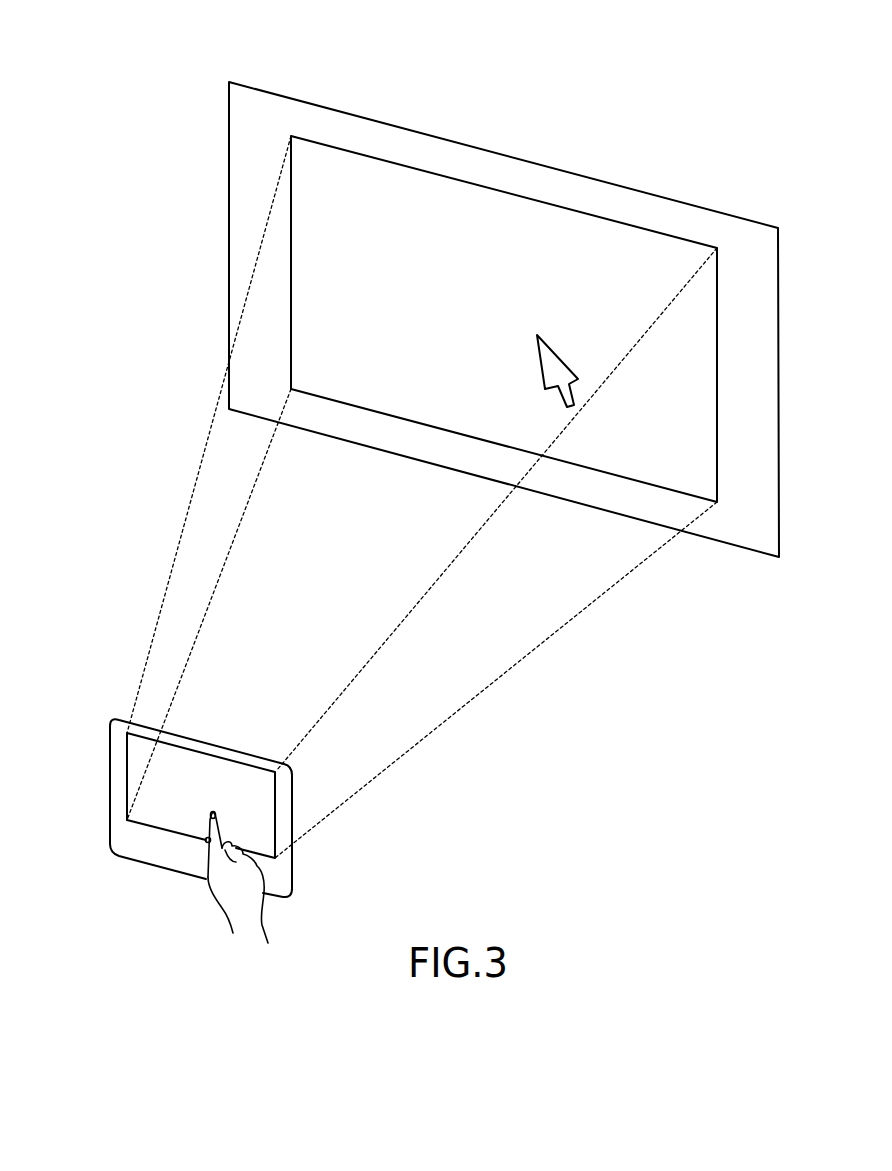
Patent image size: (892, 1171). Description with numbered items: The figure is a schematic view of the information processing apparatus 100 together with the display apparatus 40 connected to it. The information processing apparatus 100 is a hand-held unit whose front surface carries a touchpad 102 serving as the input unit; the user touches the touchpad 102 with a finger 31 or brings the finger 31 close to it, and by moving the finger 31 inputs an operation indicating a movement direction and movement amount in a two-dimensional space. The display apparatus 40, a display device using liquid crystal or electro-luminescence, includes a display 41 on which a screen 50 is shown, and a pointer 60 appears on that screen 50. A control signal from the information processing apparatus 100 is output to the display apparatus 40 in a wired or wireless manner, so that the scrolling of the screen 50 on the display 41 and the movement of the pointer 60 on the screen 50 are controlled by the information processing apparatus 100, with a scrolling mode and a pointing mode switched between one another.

The display apparatus 40 is at (486, 82).
The display 41 is at (533, 217).
The screen 50 is at (642, 247).
The pointer 60 is at (555, 368).
The information processing apparatus 100 is at (97, 731).
The touchpad 102 is at (263, 833).
The finger 31 is at (206, 828).